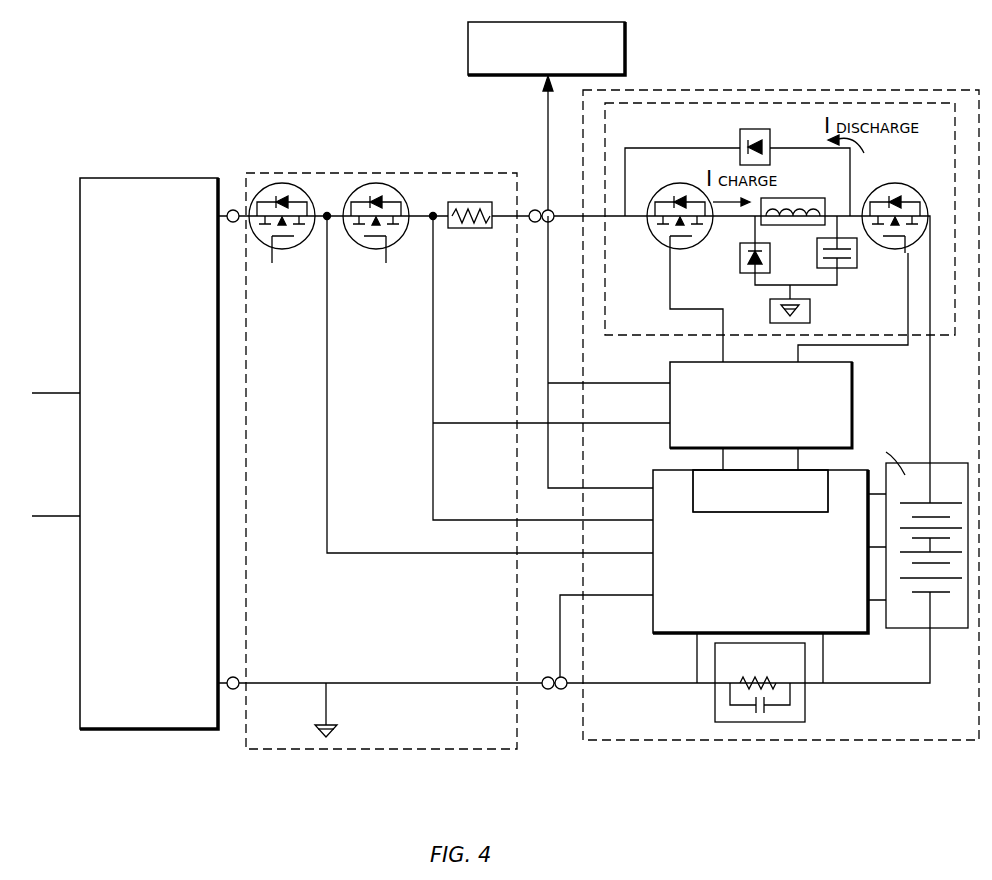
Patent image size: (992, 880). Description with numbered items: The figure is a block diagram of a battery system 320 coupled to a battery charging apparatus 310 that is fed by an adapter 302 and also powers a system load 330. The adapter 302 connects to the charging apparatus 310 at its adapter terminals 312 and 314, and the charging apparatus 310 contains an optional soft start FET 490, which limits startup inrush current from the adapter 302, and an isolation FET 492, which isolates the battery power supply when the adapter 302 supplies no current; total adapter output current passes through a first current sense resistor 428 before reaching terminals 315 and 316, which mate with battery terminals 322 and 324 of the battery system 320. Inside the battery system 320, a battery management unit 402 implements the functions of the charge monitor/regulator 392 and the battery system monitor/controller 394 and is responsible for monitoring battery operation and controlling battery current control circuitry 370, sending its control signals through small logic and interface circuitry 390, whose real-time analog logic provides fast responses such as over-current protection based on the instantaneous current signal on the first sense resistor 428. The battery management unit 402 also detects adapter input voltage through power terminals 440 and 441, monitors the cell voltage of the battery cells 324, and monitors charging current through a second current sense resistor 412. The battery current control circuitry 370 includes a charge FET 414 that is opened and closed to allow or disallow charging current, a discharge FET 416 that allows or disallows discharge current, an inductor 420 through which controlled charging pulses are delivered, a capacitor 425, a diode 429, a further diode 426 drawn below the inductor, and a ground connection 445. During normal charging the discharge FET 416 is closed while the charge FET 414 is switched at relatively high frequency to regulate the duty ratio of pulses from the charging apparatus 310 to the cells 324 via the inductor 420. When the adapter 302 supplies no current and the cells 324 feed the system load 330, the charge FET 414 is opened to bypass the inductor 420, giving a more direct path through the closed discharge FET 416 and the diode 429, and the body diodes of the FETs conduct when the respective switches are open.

The adapter 302 is at (160, 730).
The battery charging apparatus 310 is at (372, 749).
The adapter positive terminal 312 is at (232, 208).
The adapter negative terminal 314 is at (233, 690).
The terminal 315 is at (535, 209).
The terminal 316 is at (548, 690).
The battery system 320 is at (873, 740).
The battery terminal 322 is at (548, 209).
The battery cell 324 is at (956, 628).
The system load 330 is at (468, 50).
The battery current control circuitry 370 is at (648, 335).
The small logic and interface circuitry 390 is at (642, 416).
The charge monitor/regulator 392 is at (760, 491).
The battery system monitor/controller 394 is at (760, 491).
The battery management unit 402 is at (653, 625).
The current sense resistor (Rs3) 412 is at (805, 705).
The charge FET switching element 414 is at (662, 246).
The discharge FET switching element 416 is at (893, 248).
The inductor (L1) 420 is at (810, 197).
The capacitor 425 is at (817, 263).
The diode 426 is at (740, 260).
The current sense resistor (Rs1) 428 is at (487, 230).
The diode 429 is at (740, 140).
The power terminal 440 is at (370, 556).
The power terminal 441 is at (562, 595).
The ground connection 445 is at (810, 310).
The soft start FET 490 is at (293, 252).
The isolation FET 492 is at (372, 252).